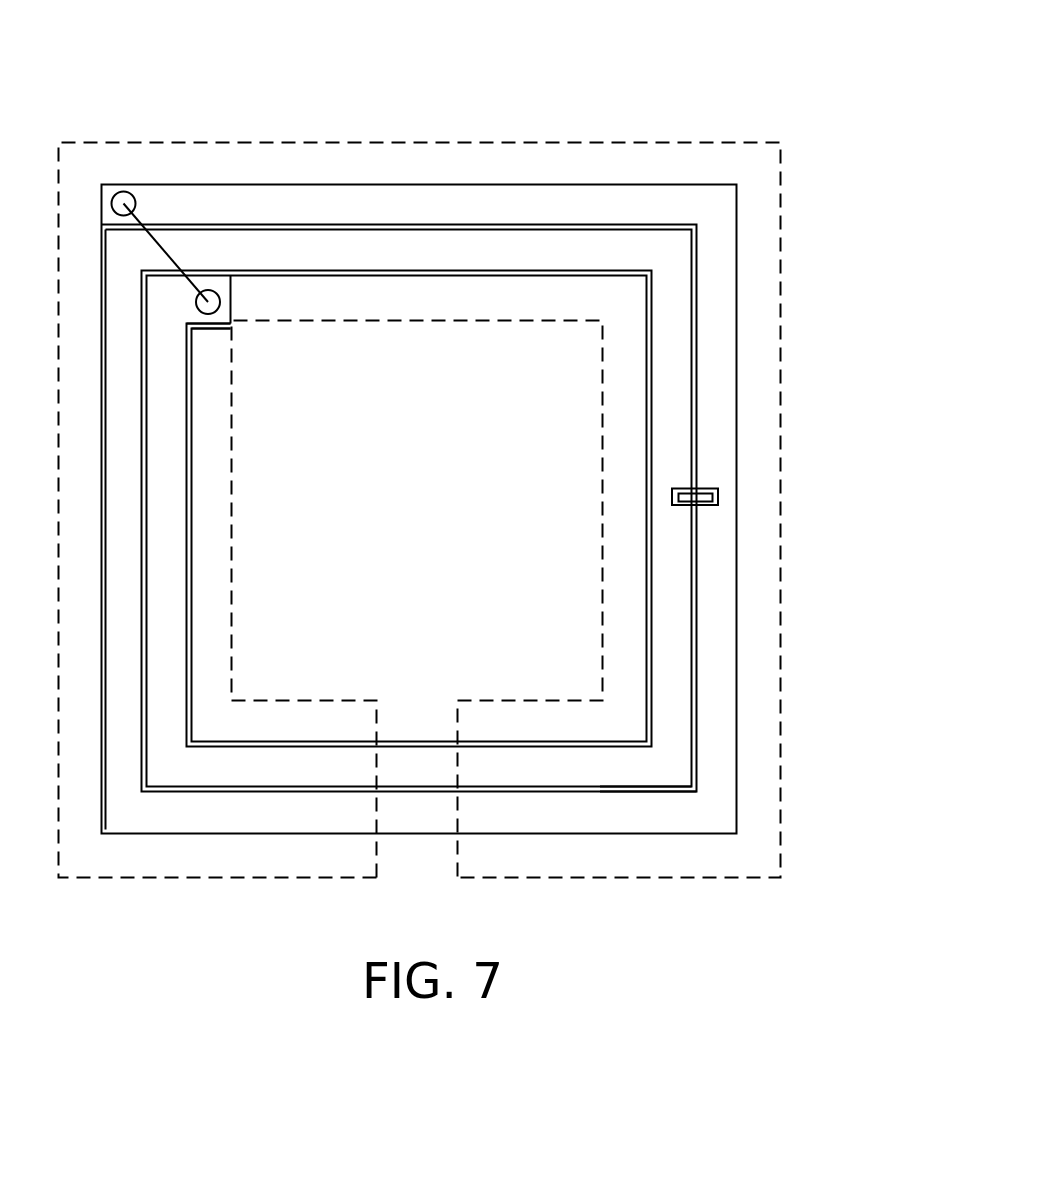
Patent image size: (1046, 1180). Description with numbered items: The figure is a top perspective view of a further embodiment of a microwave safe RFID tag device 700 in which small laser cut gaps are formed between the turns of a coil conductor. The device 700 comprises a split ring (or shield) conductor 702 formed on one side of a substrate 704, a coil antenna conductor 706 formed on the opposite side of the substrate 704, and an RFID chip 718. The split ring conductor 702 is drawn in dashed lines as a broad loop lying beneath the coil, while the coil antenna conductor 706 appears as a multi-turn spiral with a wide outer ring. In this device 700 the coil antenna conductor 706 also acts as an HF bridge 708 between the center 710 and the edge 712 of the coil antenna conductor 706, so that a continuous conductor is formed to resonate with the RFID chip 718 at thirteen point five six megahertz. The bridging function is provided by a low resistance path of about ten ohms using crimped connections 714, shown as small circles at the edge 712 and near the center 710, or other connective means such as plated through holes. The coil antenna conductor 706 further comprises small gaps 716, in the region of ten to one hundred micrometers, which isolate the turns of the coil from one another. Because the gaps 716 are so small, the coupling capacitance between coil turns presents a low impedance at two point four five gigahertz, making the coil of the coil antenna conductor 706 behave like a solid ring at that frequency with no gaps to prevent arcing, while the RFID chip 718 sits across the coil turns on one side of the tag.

The microwave safe RFID tag device 700 is at (648, 94).
The split ring conductor 702 is at (760, 305).
The substrate 704 is at (743, 219).
The coil antenna conductor 706 is at (667, 672).
The HF bridge 708 is at (186, 246).
The center of the coil antenna conductor 710 is at (215, 330).
The edge of the coil antenna conductor 712 is at (121, 176).
The crimped connections 714 is at (137, 203).
The small gaps 716 is at (673, 792).
The RFID chip 718 is at (702, 490).